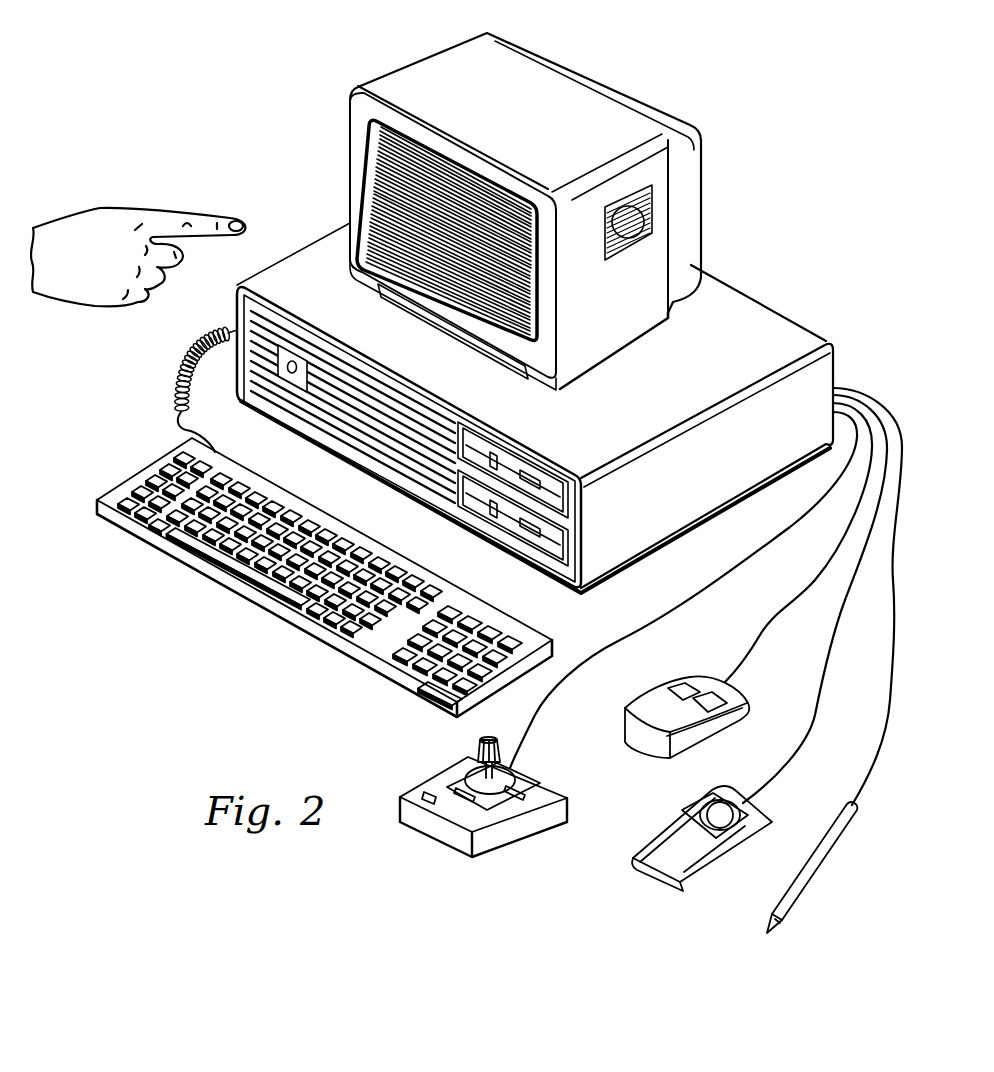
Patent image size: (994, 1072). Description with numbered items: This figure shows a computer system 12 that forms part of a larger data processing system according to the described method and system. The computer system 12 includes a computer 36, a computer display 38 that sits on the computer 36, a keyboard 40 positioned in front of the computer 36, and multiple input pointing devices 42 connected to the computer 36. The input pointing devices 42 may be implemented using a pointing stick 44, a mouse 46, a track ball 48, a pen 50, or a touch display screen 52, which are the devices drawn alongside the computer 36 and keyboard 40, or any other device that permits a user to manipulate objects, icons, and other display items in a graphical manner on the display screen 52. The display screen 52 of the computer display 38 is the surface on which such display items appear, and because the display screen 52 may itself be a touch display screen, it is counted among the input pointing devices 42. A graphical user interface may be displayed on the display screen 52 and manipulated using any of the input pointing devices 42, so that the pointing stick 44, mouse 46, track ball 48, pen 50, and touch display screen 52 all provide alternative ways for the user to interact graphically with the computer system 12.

The computer system 12 is at (263, 127).
The computer 36 is at (663, 517).
The computer display 38 is at (687, 222).
The keyboard 40 is at (293, 610).
The input pointing devices 42 is at (623, 923).
The pointing stick 44 is at (497, 833).
The mouse 46 is at (650, 748).
The track ball 48 is at (680, 867).
The pen 50 is at (797, 888).
The touch display screen 52 is at (360, 203).